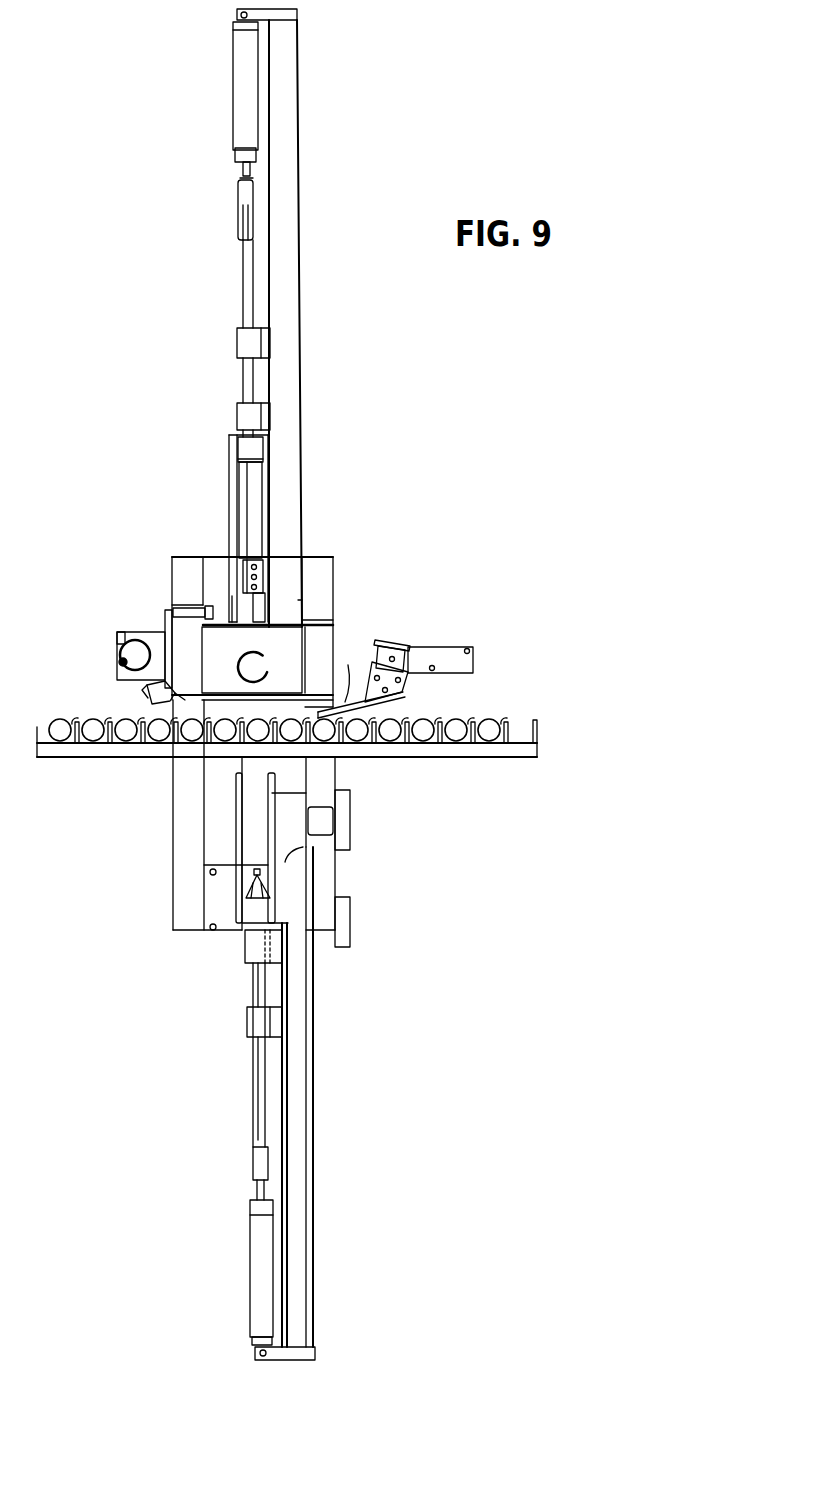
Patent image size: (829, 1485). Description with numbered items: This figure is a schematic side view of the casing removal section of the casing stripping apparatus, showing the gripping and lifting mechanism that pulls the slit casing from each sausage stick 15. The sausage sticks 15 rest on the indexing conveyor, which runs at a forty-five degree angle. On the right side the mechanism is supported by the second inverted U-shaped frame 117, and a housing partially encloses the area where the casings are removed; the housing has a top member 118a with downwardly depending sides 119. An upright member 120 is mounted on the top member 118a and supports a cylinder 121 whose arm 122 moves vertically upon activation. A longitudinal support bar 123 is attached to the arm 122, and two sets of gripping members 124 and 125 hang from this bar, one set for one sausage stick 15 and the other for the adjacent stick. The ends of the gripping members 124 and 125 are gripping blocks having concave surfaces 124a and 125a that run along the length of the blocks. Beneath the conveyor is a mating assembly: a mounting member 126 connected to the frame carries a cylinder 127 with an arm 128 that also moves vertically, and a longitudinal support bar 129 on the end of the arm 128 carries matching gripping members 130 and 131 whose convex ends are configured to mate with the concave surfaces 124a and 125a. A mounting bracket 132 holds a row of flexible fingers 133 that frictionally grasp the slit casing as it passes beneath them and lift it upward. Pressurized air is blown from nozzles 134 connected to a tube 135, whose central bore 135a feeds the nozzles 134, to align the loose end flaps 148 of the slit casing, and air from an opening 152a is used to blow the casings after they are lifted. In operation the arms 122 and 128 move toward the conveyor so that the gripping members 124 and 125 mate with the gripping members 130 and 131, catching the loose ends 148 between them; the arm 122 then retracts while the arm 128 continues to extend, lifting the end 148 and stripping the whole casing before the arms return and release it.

The sausage stick 15 is at (60, 722).
The second inverted U-shaped frame 117 is at (181, 850).
The top member 118a is at (245, 622).
The downwardly depending sides 119 is at (195, 642).
The upright member 120 is at (300, 244).
The cylinder 121 is at (233, 90).
The arm 122 is at (245, 242).
The longitudinal support bar 123 is at (243, 437).
The gripping members 124 is at (272, 524).
The concave surface 124a is at (302, 622).
The gripping members 125 is at (238, 513).
The concave surface 125a is at (237, 623).
The mounting member 126 is at (298, 1132).
The cylinder 127 is at (257, 1268).
The arm 128 is at (256, 1092).
The longitudinal support bar 129 is at (248, 927).
The gripping member 130 is at (275, 788).
The gripping member 131 is at (245, 790).
The mounting bracket 132 is at (438, 648).
The flexible fingers 133 is at (353, 669).
The nozzles 134 is at (147, 700).
The tube 135 is at (122, 650).
The central bore 135a is at (120, 664).
The end flaps 148 is at (400, 720).
The opening 152a is at (263, 657).